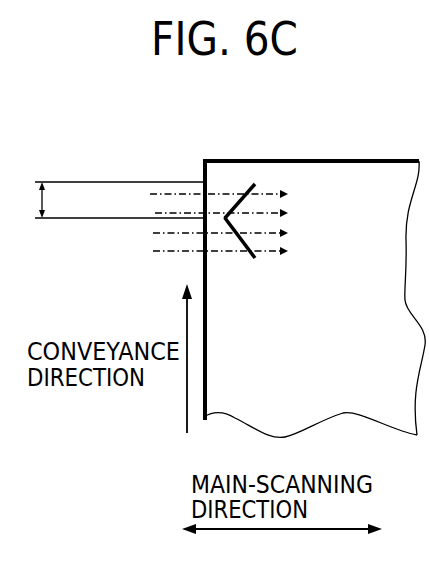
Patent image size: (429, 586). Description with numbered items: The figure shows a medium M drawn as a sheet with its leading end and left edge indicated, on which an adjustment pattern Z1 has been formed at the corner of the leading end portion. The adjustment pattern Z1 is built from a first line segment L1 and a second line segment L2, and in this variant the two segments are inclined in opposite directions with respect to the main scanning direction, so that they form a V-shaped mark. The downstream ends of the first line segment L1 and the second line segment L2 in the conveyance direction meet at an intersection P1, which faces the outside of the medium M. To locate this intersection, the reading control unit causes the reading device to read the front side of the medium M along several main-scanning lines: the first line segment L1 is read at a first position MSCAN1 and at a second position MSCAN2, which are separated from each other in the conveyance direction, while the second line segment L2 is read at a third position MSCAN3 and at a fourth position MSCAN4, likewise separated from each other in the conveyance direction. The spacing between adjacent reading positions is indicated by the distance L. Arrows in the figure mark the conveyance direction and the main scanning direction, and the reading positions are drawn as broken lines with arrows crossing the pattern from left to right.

The medium M is at (388, 160).
The second line segment L2 is at (246, 188).
The first line segment L1 is at (251, 259).
The intersection P1 is at (227, 218).
The adjustment pattern Z1 is at (307, 255).
The distance between scans L is at (114, 200).
The first position MSCAN1 is at (150, 193).
The second position MSCAN2 is at (155, 212).
The third position MSCAN3 is at (153, 233).
The fourth position MSCAN4 is at (154, 252).